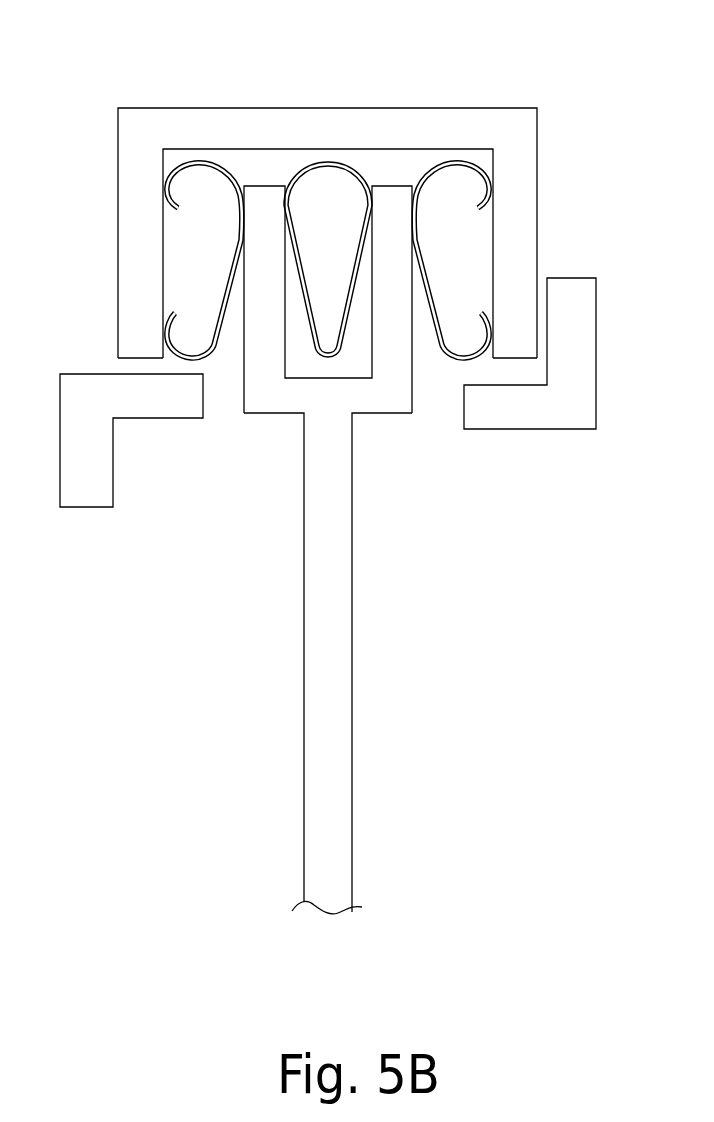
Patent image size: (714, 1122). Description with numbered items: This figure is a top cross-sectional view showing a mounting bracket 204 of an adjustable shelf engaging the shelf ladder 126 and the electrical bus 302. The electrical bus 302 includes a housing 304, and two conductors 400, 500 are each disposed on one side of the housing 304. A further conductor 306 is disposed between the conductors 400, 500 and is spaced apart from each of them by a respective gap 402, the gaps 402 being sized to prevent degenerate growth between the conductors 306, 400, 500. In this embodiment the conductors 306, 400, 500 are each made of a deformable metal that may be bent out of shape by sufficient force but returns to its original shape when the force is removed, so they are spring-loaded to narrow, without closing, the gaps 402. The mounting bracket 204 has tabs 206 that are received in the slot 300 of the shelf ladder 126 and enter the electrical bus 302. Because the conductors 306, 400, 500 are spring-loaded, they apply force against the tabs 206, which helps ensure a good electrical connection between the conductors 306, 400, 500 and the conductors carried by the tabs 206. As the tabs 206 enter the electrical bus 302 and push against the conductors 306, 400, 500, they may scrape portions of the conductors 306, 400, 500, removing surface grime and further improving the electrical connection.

The electrical bus 302 is at (476, 78).
The housing 304 is at (277, 120).
The conductor 306 is at (330, 163).
The tabs 206 is at (267, 192).
The conductor 400 is at (218, 306).
The conductor 500 is at (438, 306).
The gap 402 is at (250, 173).
The slot 300 is at (222, 412).
The shelf ladder 126 is at (545, 412).
The mounting bracket 204 is at (340, 723).